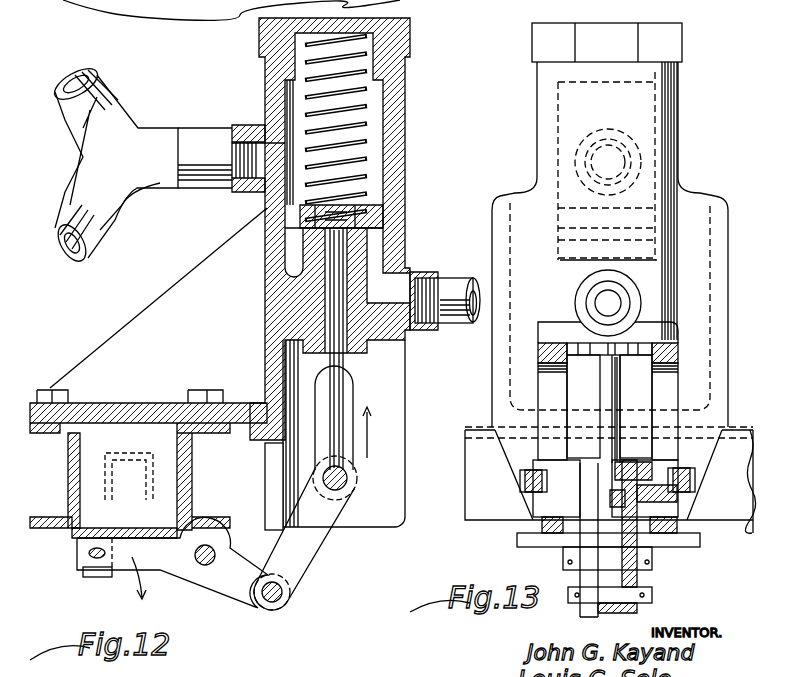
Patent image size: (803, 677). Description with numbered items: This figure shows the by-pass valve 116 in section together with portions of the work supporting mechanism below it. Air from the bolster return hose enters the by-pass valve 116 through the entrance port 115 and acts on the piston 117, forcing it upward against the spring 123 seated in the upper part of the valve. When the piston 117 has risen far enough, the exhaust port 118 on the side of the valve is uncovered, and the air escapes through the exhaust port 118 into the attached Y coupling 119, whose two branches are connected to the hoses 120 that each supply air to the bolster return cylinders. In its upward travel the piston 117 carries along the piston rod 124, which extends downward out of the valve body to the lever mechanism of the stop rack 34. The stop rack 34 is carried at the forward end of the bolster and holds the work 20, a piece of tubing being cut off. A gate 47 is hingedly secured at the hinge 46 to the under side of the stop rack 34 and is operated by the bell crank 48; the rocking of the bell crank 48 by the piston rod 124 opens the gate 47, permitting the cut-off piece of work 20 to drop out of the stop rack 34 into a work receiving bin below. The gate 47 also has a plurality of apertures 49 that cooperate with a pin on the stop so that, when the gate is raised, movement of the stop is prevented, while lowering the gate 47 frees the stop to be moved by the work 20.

In FIG. 12, the by-pass valve 116 is at (395, 132).
In FIG. 13, the by-pass valve 116 is at (666, 145).
In FIG. 12, the piston 117 is at (362, 245).
In FIG. 12, the exhaust port 118 is at (262, 135).
In FIG. 12, the Y coupling 119 is at (136, 128).
In FIG. 12, the hoses 120 is at (95, 233).
In FIG. 12, the spring 123 is at (356, 166).
In FIG. 12, the piston rod 124 is at (332, 400).
In FIG. 13, the piston rod 124 is at (611, 404).
In FIG. 12, the entrance port 115 is at (391, 297).
In FIG. 12, the stop rack 34 is at (191, 478).
In FIG. 13, the stop rack 34 is at (733, 457).
In FIG. 12, the work 20 is at (105, 487).
In FIG. 12, the gate 47 is at (119, 529).
In FIG. 13, the gate 47 is at (603, 541).
In FIG. 12, the hinge 46 is at (201, 570).
In FIG. 12, the bell crank 48 is at (238, 590).
In FIG. 13, the apertures 49 is at (640, 606).